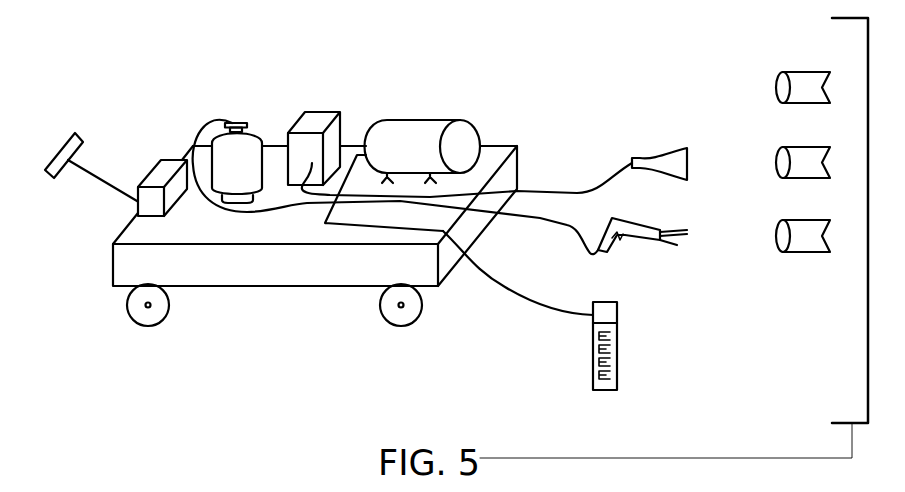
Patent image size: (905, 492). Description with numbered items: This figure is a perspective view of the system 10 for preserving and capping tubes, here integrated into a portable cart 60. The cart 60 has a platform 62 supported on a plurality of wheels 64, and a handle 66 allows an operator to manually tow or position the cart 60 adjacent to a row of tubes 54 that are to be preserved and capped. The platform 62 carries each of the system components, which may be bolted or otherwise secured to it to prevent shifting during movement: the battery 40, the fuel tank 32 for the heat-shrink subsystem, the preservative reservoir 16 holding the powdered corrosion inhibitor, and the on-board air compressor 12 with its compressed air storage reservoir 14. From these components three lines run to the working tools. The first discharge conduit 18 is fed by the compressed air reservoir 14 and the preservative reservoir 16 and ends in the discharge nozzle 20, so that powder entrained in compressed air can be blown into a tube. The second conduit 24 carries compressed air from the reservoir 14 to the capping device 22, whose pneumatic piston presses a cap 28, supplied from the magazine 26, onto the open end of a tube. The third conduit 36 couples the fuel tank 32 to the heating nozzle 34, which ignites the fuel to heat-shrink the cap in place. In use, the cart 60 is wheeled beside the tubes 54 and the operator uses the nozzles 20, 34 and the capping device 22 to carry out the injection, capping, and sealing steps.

The system 10 is at (388, 70).
The air compressor 12 is at (400, 135).
The compressed air storage reservoir 14 is at (437, 127).
The preservative reservoir 16 is at (312, 122).
The first discharge conduit 18 is at (553, 193).
The discharge nozzle 20 is at (675, 150).
The capping device 22 is at (630, 292).
The second conduit 24 is at (513, 296).
The magazine 26 is at (620, 376).
The caps 28 is at (611, 348).
The fuel tank 32 is at (242, 158).
The nozzle 34 is at (645, 209).
The third conduit 36 is at (537, 223).
The battery 40 is at (155, 182).
The tubes 54 is at (803, 89).
The portable cart 60 is at (512, 121).
The platform 62 is at (263, 273).
The wheels 64 is at (147, 316).
The handle 66 is at (66, 132).